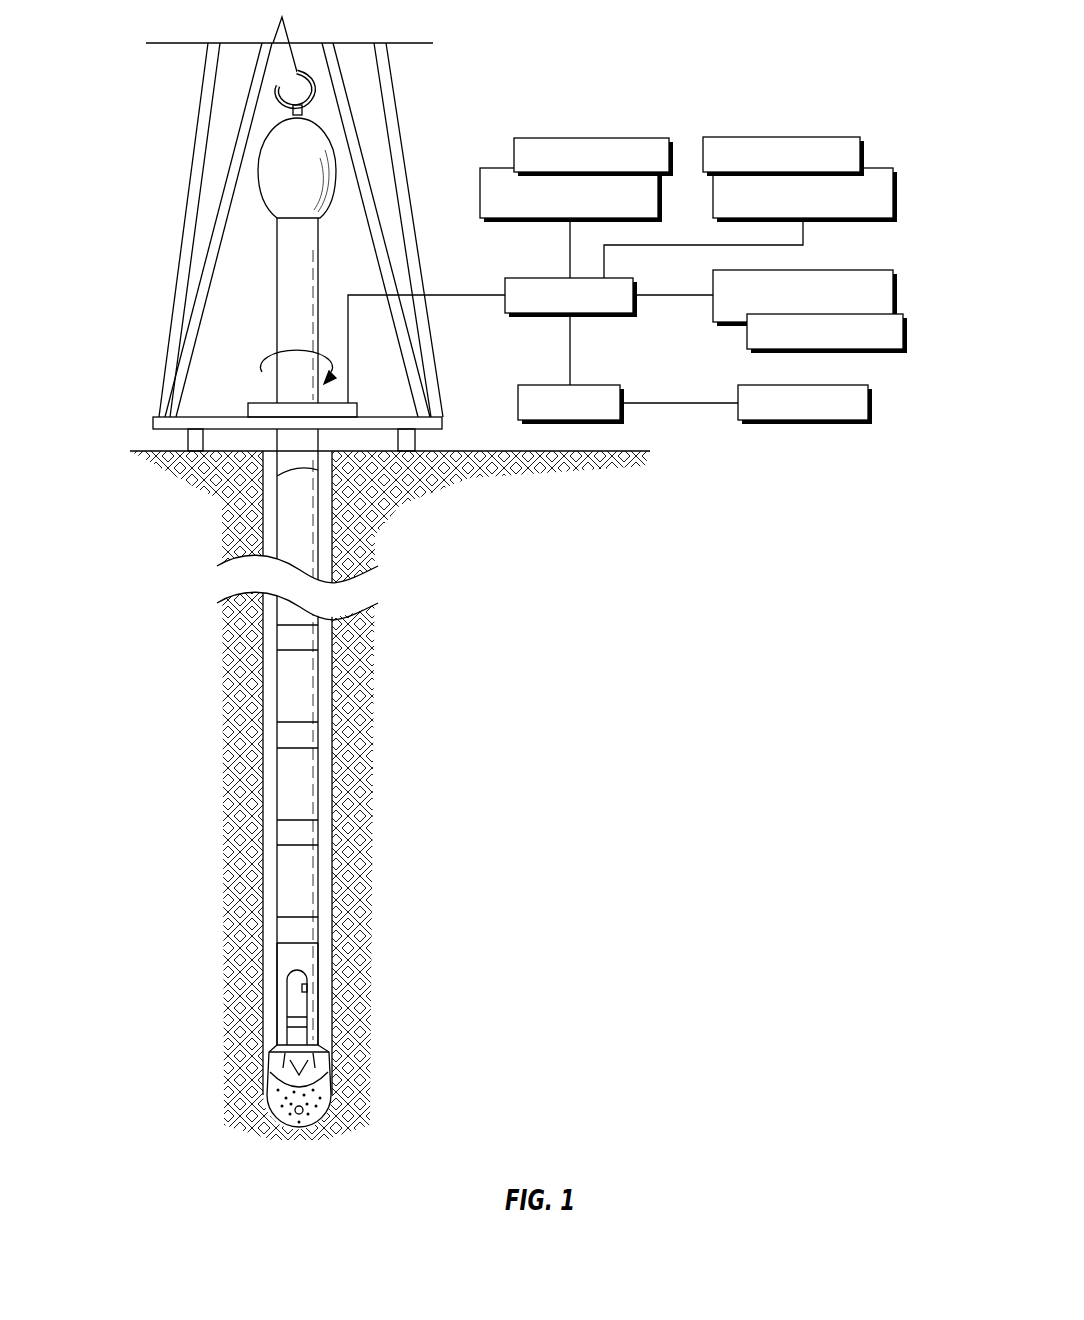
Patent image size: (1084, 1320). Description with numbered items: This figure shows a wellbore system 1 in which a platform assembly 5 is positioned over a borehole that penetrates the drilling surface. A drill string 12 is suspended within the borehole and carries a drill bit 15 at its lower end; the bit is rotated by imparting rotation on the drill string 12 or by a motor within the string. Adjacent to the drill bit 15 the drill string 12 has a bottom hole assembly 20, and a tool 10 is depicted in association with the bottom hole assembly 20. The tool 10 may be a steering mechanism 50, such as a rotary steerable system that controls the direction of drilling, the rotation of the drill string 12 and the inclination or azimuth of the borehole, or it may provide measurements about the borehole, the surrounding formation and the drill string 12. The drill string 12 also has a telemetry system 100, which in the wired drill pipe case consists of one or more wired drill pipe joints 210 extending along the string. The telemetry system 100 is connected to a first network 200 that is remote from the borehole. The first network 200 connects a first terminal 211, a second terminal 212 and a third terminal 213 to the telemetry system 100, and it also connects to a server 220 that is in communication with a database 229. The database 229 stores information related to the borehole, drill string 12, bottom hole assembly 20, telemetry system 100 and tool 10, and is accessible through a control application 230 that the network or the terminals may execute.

The wellbore system 1 is at (131, 121).
The platform assembly 5 is at (148, 421).
The tool 10 is at (287, 990).
The drill string 12 is at (283, 602).
The drill bit 15 is at (275, 1077).
The bottom hole assembly 20 is at (420, 943).
The steering mechanism 50 is at (278, 996).
The telemetry system 100 is at (421, 451).
The first network 200 is at (535, 278).
The wired drill pipe joints 210 is at (285, 687).
The first terminal 211 is at (494, 168).
The second terminal 212 is at (878, 168).
The third terminal 213 is at (855, 271).
The server 220 is at (537, 385).
The database 229 is at (855, 385).
The control application 230 is at (591, 138).